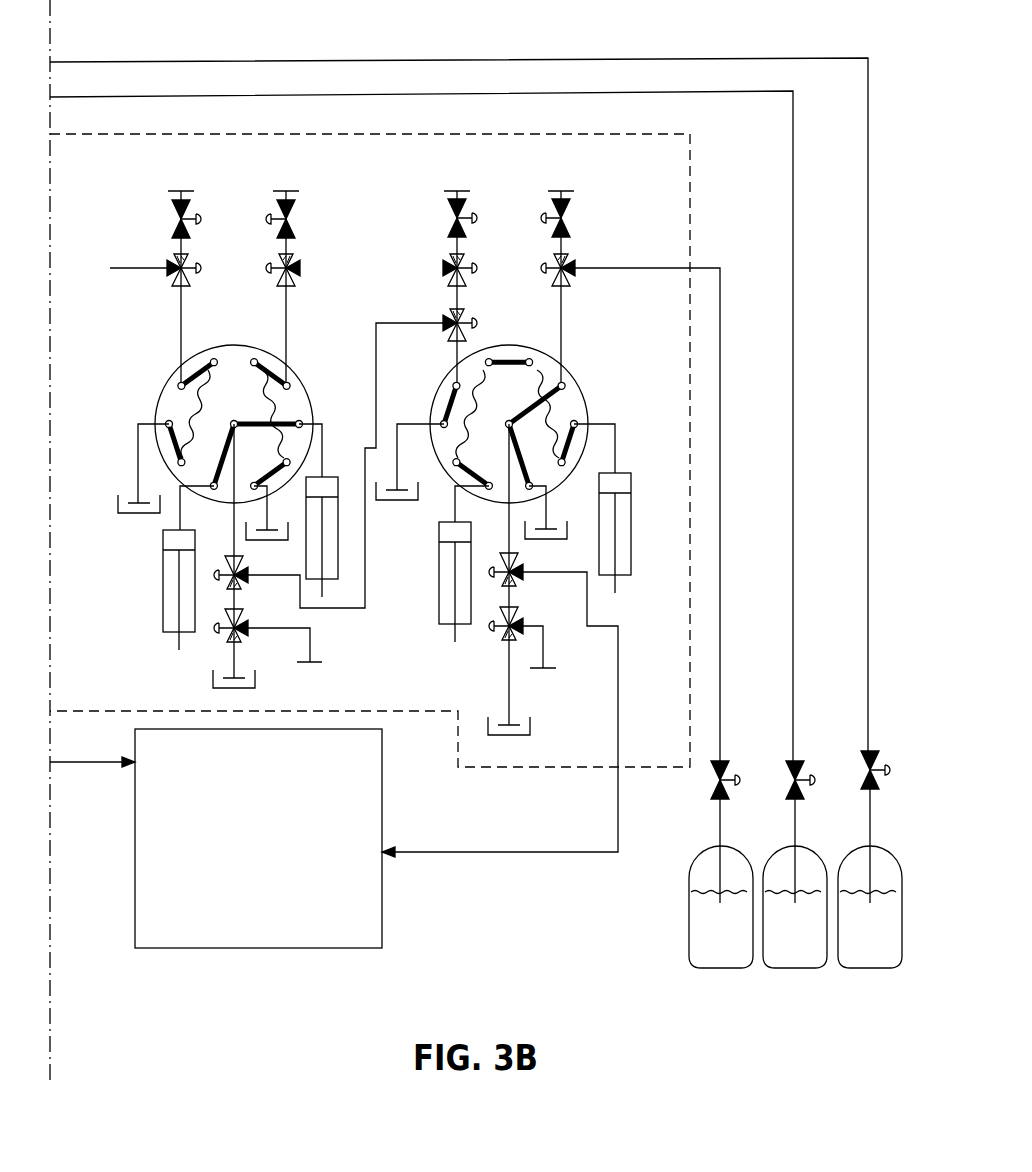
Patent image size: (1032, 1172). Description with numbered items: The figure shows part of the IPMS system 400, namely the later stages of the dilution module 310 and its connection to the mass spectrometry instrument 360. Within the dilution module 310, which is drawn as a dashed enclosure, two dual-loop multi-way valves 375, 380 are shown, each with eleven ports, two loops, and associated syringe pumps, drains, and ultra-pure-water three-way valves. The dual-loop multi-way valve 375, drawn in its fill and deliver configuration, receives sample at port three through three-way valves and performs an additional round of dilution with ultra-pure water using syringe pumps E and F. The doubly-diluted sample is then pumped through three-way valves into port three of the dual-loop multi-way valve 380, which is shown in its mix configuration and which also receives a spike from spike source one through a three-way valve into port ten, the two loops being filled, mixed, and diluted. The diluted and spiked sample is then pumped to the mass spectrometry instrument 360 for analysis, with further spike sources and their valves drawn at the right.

The IPMS system 400 is at (488, 26).
The dilution module 310 is at (690, 200).
The mass spectrometry instrument 360 is at (382, 778).
The dual-loop multi-way valve 375 is at (305, 391).
The dual-loop multi-way valve 380 is at (588, 420).